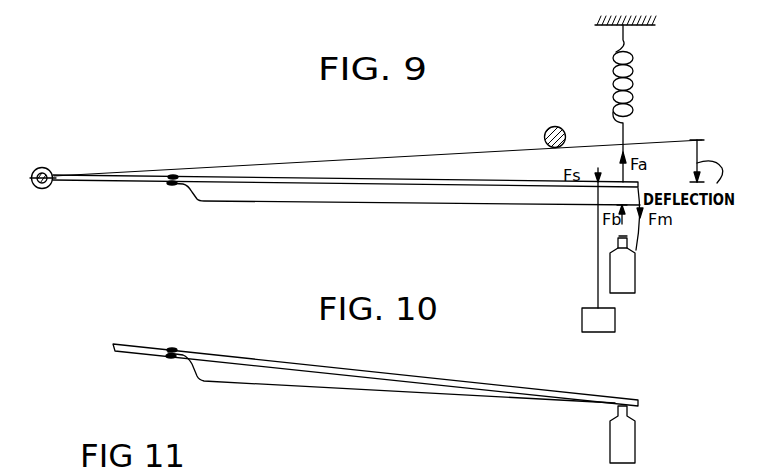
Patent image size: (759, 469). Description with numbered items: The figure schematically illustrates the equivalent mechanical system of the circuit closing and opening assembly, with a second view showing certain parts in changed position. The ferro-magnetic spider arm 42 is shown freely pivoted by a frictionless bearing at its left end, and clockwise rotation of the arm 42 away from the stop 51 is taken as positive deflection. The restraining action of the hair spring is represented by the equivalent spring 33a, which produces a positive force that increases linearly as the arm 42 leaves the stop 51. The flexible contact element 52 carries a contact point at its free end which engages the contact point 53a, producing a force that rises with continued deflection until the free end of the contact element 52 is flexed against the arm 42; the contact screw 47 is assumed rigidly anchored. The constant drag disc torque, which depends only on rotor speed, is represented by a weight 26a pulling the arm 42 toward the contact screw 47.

In FIG. 9, the ferro-magnetic spider arm 42 is at (356, 180).
In FIG. 10, the ferro-magnetic spider arm 42 is at (360, 375).
In FIG. 9, the contact element 52 is at (370, 204).
In FIG. 10, the contact element 52 is at (374, 396).
In FIG. 9, the stop 51 is at (552, 126).
In FIG. 9, the equivalent spring 33a is at (631, 80).
In FIG. 9, the contact screw 47 is at (631, 272).
In FIG. 10, the contact screw 47 is at (628, 440).
In FIG. 9, the contact point 53a is at (628, 242).
In FIG. 9, the weight 26a is at (617, 320).